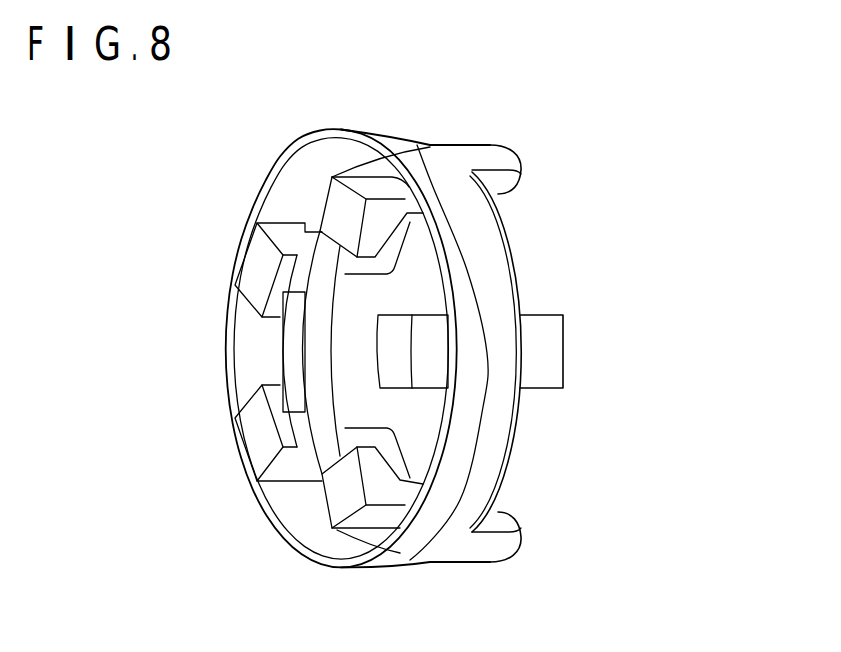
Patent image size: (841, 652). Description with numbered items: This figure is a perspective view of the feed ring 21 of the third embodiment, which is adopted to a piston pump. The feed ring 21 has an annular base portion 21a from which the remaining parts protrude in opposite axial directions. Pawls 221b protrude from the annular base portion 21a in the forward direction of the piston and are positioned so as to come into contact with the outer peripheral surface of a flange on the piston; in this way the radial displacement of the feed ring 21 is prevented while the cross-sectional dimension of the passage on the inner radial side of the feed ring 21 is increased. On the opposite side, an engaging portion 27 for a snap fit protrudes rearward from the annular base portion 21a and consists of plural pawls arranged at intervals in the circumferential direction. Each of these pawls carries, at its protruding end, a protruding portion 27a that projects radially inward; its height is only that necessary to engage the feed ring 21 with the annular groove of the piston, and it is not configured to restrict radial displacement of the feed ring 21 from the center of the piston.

The feed ring 21 is at (462, 148).
The annular base portion 21a is at (490, 467).
The pawl 221b is at (541, 333).
The engaging portion 27 is at (290, 220).
The protruding portion 27a is at (320, 303).